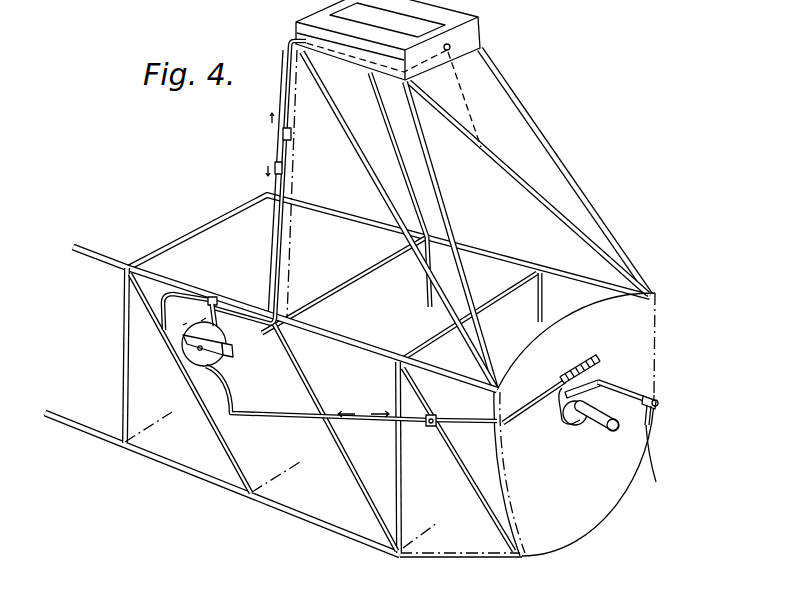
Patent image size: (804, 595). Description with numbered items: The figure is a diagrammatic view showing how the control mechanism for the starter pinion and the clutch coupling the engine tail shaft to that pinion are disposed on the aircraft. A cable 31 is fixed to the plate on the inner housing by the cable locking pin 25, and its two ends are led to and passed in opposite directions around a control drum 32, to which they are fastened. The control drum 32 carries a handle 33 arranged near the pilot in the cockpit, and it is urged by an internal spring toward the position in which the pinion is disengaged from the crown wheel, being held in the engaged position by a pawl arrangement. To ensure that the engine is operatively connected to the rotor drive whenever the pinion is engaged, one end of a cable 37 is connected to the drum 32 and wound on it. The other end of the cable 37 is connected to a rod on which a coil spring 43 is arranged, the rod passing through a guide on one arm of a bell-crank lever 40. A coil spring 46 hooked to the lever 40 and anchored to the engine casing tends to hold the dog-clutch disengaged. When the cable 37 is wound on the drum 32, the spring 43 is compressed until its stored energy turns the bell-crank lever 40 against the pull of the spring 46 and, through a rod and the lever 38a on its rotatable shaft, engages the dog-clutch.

The cable locking pin 25 is at (478, 18).
The cable 31 is at (250, 387).
The control drum 32 is at (198, 354).
The handle 33 is at (208, 299).
The cable 37 is at (522, 408).
The lever 38a is at (669, 465).
The bell-crank lever 40 is at (571, 428).
The coil spring 43 is at (580, 368).
The coil spring 46 is at (657, 400).